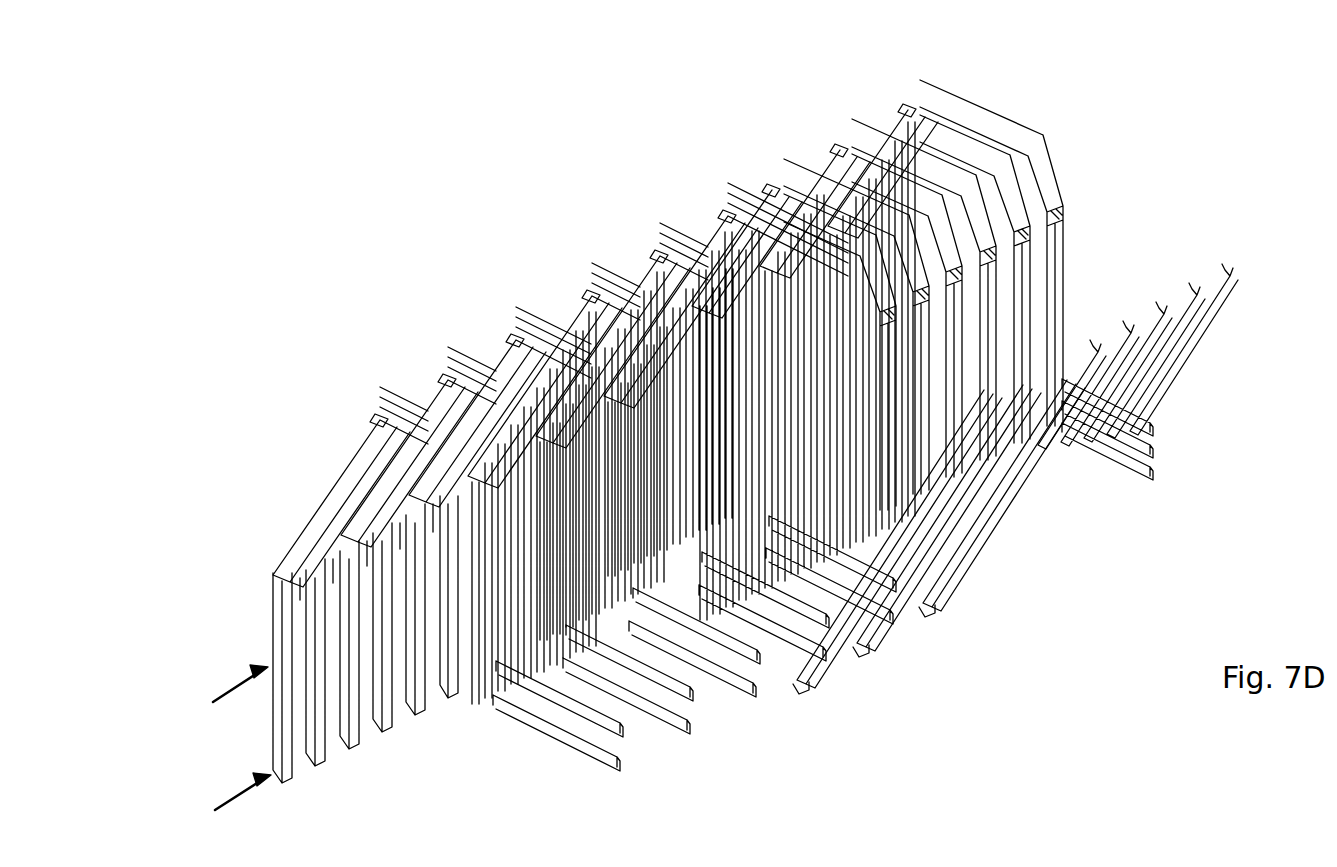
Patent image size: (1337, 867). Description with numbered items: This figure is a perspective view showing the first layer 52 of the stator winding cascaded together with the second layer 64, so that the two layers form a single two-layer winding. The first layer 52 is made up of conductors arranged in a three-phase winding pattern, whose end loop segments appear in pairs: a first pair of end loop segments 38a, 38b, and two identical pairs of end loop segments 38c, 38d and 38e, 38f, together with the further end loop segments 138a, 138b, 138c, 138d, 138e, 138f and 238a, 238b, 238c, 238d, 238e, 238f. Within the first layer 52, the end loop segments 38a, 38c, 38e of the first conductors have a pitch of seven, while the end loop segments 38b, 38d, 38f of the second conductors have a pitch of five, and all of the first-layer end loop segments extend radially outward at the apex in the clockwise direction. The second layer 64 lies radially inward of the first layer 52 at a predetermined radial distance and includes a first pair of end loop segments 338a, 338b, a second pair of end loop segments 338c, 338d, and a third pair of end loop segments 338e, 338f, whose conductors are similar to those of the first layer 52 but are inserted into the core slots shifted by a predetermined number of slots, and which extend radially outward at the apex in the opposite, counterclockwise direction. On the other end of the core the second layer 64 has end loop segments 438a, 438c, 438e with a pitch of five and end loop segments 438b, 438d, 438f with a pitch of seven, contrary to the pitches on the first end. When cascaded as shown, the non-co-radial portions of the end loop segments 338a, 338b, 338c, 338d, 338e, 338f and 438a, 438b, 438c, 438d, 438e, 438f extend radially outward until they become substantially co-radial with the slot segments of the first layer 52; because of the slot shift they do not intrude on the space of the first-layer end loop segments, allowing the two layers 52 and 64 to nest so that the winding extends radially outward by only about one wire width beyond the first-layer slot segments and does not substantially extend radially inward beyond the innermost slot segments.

The end loop segment 38a is at (378, 392).
The end loop segment 38b is at (373, 418).
The end loop segment 38c is at (445, 355).
The end loop segment 38d is at (440, 388).
The end loop segment 38e is at (512, 318).
The end loop segment 38f is at (505, 348).
The end loop segment 138a is at (620, 733).
The end loop segment 138b is at (617, 767).
The end loop segment 138c is at (690, 697).
The end loop segment 138d is at (687, 730).
The end loop segment 138e is at (757, 660).
The end loop segment 138f is at (753, 693).
The end loop segment 238a is at (770, 170).
The end loop segment 238b is at (767, 195).
The end loop segment 238c is at (838, 125).
The end loop segment 238d is at (838, 155).
The end loop segment 238e is at (905, 85).
The end loop segment 238f is at (900, 112).
The end loop segment 338a is at (590, 290).
The end loop segment 338b is at (587, 323).
The end loop segment 338c is at (658, 248).
The end loop segment 338d is at (655, 280).
The end loop segment 338e is at (722, 215).
The end loop segment 338f is at (718, 245).
The end loop segment 438a is at (807, 657).
The end loop segment 438b is at (803, 682).
The end loop segment 438c is at (870, 613).
The end loop segment 438d is at (867, 647).
The end loop segment 438e is at (933, 580).
The end loop segment 438f is at (933, 603).
The first layer 52 is at (243, 688).
The second layer 64 is at (248, 788).